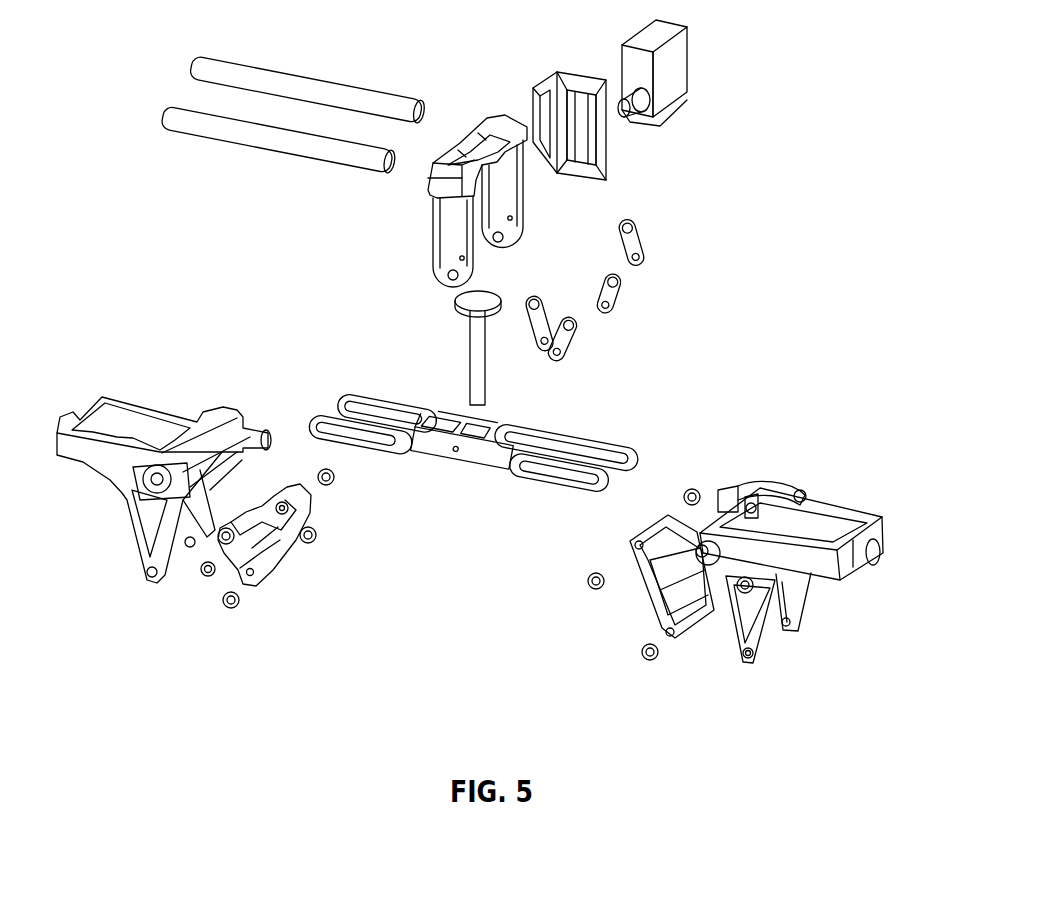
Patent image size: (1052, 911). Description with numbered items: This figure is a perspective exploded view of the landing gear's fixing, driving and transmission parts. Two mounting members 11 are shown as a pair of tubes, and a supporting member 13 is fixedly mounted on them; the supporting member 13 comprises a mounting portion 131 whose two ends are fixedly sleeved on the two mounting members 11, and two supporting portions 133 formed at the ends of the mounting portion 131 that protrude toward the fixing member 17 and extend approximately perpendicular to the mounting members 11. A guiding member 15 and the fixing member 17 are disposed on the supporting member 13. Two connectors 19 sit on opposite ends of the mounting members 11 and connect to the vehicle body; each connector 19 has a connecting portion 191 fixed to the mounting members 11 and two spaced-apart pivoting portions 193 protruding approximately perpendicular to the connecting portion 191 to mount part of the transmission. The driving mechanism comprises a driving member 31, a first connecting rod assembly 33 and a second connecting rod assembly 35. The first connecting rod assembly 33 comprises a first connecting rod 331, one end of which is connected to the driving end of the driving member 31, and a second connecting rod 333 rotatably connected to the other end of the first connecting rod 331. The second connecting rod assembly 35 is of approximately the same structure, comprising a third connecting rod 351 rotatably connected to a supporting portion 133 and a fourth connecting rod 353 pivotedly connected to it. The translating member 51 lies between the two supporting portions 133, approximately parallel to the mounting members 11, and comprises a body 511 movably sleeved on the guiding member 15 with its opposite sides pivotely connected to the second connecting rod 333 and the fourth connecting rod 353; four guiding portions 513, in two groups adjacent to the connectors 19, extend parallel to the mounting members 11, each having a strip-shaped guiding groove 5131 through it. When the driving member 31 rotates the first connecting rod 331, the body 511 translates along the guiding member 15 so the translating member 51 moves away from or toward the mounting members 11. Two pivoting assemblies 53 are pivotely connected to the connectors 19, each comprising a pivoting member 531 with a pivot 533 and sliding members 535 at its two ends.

The mounting member 11 is at (232, 70).
The supporting member 13 is at (407, 201).
The mounting portion 131 is at (432, 177).
The supporting portion 133 is at (447, 232).
The guiding member 15 is at (472, 340).
The fixing member 17 is at (557, 68).
The driving member 31 is at (670, 58).
The first connecting rod assembly 33 is at (638, 340).
The first connecting rod 331 is at (575, 340).
The second connecting rod 333 is at (553, 368).
The second connecting rod assembly 35 is at (687, 266).
The third connecting rod 351 is at (622, 292).
The fourth connecting rod 353 is at (643, 242).
The translating member 51 is at (490, 421).
The body 511 is at (464, 438).
The guiding portion 513 is at (604, 447).
The guiding groove 5131 is at (637, 450).
The pivoting assembly 53 is at (330, 548).
The pivoting member 531 is at (273, 575).
The pivot 533 is at (315, 538).
The sliding member 535 is at (379, 499).
The connector 19 is at (766, 596).
The connecting portion 191 is at (813, 560).
The pivoting portion 193 is at (758, 642).